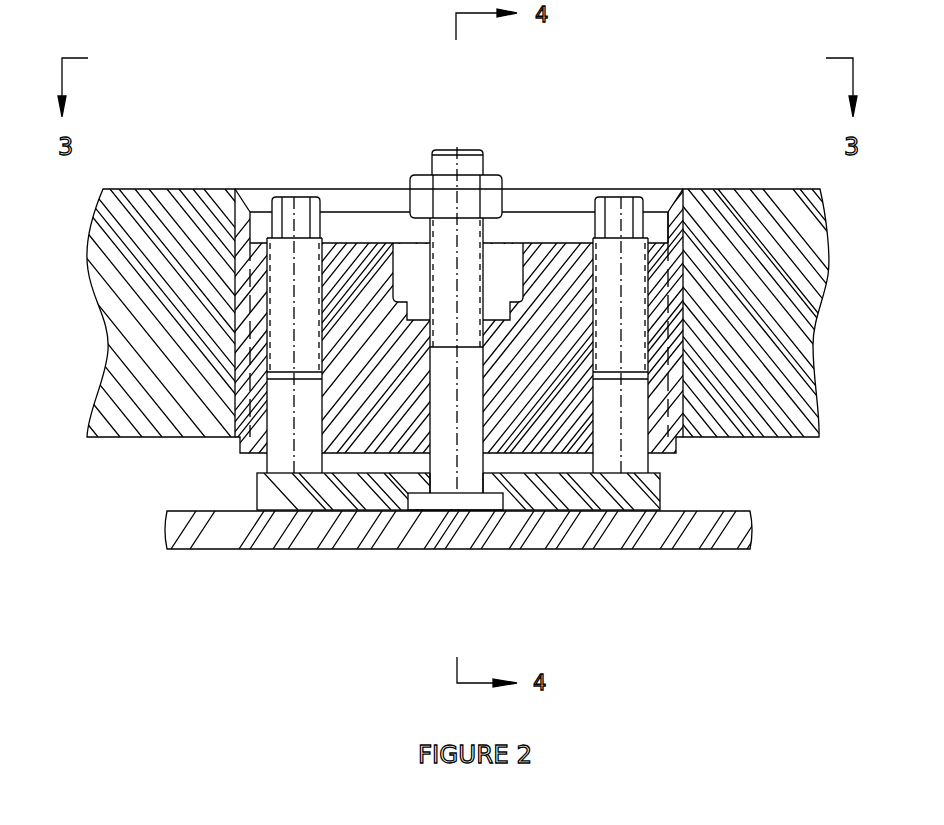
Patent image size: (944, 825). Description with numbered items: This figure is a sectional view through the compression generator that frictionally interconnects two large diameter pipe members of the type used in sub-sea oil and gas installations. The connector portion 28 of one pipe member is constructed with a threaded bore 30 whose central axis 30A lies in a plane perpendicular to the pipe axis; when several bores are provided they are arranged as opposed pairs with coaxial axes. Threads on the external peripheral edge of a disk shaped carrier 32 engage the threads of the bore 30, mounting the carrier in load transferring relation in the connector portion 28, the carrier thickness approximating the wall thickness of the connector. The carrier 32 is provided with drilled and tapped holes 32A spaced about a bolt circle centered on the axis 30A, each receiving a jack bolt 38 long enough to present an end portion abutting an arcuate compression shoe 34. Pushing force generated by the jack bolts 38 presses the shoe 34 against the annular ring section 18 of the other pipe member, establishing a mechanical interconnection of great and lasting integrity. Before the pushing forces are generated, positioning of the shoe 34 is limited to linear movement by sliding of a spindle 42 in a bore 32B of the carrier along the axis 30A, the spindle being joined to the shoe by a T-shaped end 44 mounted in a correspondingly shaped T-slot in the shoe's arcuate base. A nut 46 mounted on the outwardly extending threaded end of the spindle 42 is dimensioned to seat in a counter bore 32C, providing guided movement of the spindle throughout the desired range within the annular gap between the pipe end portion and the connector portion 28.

The annular ring section 18 is at (673, 549).
The connector portion 28 is at (203, 189).
The threaded bore 30 is at (247, 448).
The central axis 30A is at (456, 152).
The disk shaped carrier 32 is at (257, 457).
The drilled and tapped holes 32A is at (669, 189).
The bore 32B is at (478, 445).
The counter bore 32C is at (521, 267).
The arcuate compression shoe 34 is at (664, 489).
The jack bolt 38 is at (257, 189).
The spindle 42 is at (430, 232).
The T-shaped end 44 is at (426, 508).
The nut 46 is at (413, 177).